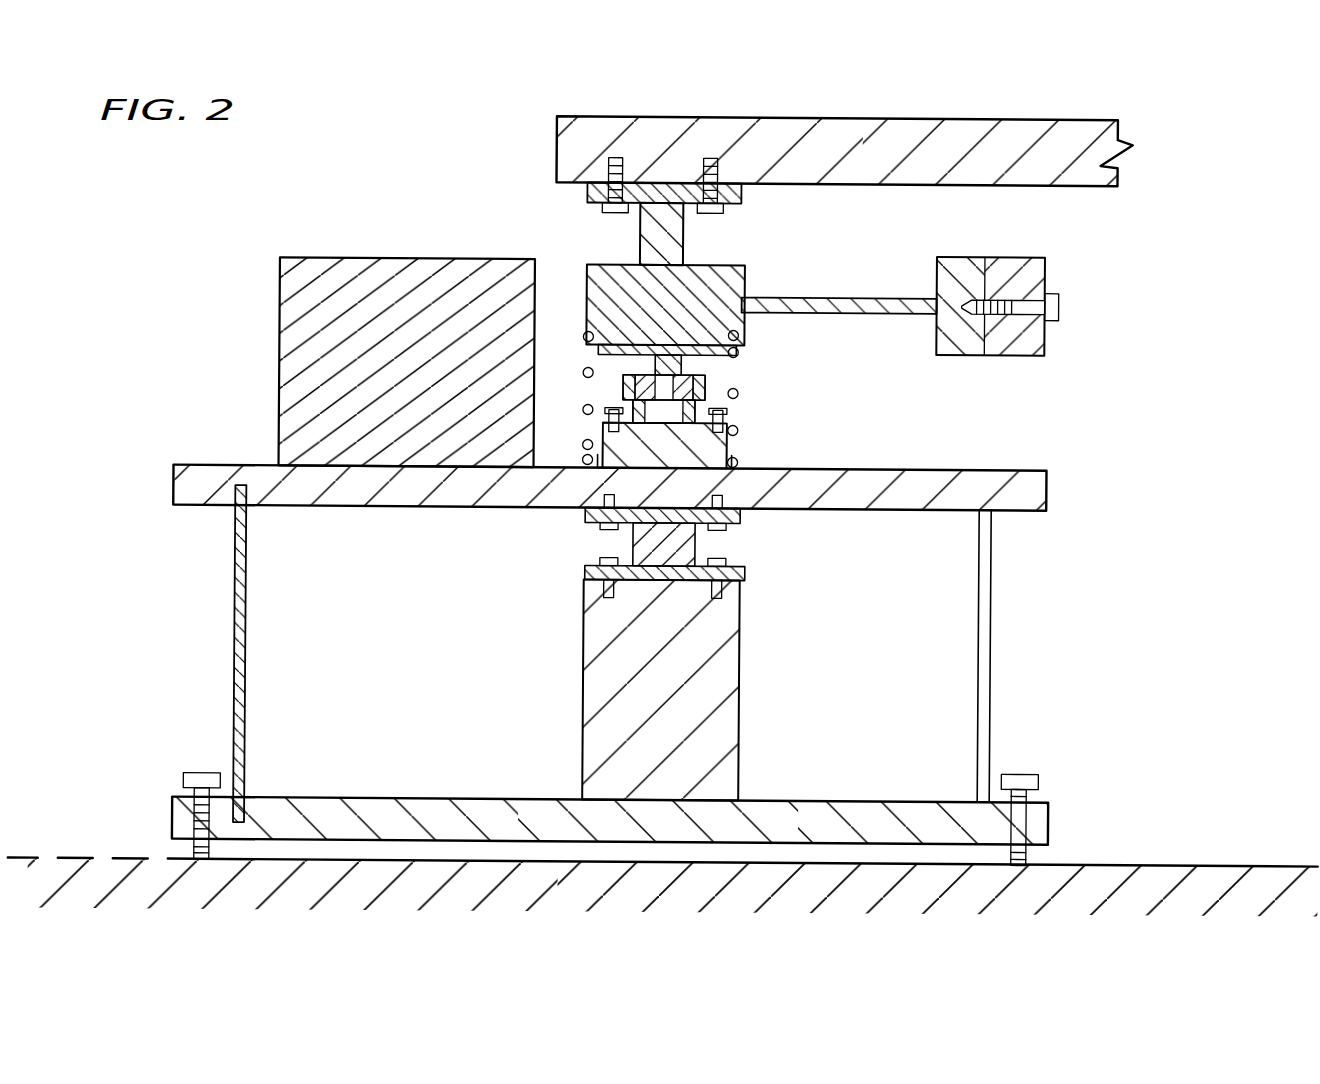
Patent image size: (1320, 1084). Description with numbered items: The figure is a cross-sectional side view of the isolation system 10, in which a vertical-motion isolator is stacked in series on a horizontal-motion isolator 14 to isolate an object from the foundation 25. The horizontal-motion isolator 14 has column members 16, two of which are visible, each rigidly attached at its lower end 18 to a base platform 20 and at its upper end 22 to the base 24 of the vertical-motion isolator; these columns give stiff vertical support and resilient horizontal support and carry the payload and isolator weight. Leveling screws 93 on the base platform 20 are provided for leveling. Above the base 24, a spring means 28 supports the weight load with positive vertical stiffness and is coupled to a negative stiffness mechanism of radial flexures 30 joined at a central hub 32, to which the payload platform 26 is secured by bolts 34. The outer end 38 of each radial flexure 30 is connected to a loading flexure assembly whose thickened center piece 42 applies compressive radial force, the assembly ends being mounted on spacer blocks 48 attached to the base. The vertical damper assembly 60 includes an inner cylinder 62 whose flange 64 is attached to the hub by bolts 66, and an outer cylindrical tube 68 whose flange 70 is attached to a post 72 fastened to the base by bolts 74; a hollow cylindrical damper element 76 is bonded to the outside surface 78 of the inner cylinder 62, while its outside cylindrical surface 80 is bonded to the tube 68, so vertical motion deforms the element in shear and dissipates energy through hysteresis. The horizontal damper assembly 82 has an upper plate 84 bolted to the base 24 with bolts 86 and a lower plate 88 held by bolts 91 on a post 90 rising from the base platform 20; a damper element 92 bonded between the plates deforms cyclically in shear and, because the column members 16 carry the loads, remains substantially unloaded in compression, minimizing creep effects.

The system 10 is at (1080, 381).
The horizontal-motion isolator 14 is at (1058, 583).
The column member 16 is at (236, 605).
The lower end 18 is at (250, 800).
The base platform 20 is at (380, 798).
The upper end 22 is at (249, 502).
The base 24 is at (1044, 480).
The foundation 25 is at (1130, 860).
The payload platform 26 is at (930, 118).
The spring means 28 is at (592, 411).
The radial flexure 30 is at (864, 296).
The central hub 32 is at (697, 345).
The bolt 34 is at (568, 188).
The outer end 38 is at (966, 255).
The thickened center piece 42 is at (1028, 256).
The spacer block 48 is at (292, 283).
The damper assembly 60 is at (763, 349).
The inner cylinder 62 is at (716, 300).
The flange 64 is at (627, 345).
The bolt 66 is at (596, 356).
The outer cylindrical tube 68 is at (610, 404).
The flange 70 is at (737, 432).
The post 72 is at (602, 445).
The bolt 74 is at (600, 408).
The damper element 76 is at (705, 404).
The outside surface 78 is at (735, 458).
The outside cylindrical surface 80 is at (608, 468).
The damper assembly 82 is at (806, 563).
The upper plate 84 is at (740, 510).
The bolt 86 is at (600, 518).
The lower plate 88 is at (745, 578).
The post 90 is at (744, 669).
The bolt 91 is at (603, 560).
The damper element 92 is at (633, 540).
The leveling screw 93 is at (200, 775).